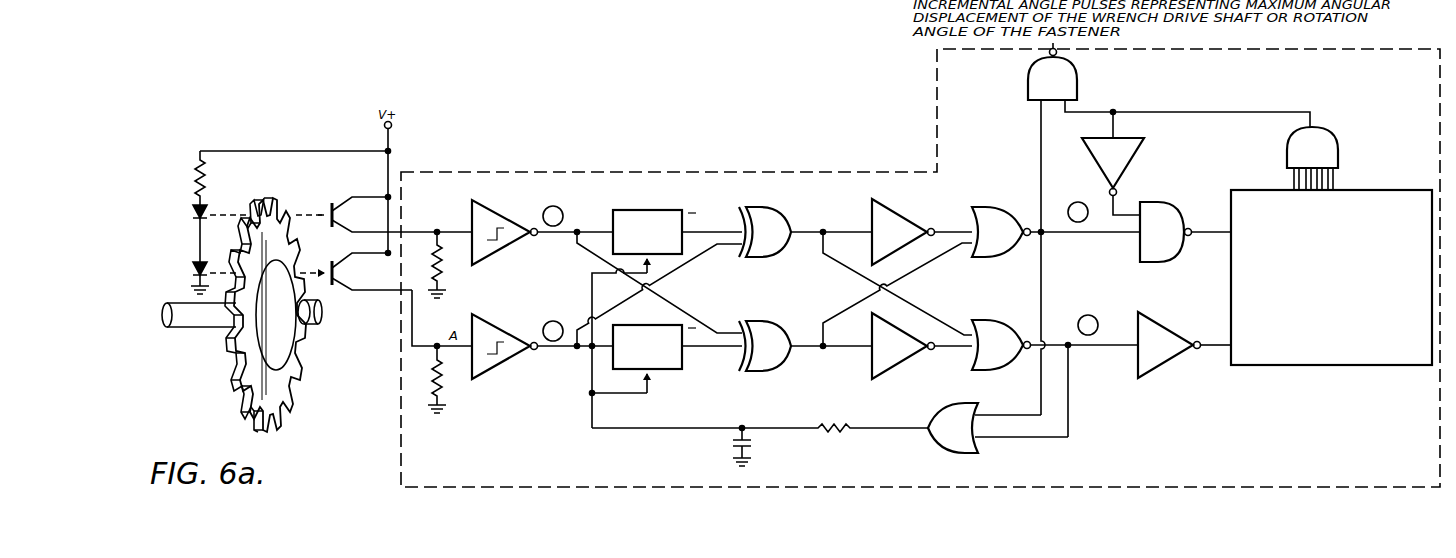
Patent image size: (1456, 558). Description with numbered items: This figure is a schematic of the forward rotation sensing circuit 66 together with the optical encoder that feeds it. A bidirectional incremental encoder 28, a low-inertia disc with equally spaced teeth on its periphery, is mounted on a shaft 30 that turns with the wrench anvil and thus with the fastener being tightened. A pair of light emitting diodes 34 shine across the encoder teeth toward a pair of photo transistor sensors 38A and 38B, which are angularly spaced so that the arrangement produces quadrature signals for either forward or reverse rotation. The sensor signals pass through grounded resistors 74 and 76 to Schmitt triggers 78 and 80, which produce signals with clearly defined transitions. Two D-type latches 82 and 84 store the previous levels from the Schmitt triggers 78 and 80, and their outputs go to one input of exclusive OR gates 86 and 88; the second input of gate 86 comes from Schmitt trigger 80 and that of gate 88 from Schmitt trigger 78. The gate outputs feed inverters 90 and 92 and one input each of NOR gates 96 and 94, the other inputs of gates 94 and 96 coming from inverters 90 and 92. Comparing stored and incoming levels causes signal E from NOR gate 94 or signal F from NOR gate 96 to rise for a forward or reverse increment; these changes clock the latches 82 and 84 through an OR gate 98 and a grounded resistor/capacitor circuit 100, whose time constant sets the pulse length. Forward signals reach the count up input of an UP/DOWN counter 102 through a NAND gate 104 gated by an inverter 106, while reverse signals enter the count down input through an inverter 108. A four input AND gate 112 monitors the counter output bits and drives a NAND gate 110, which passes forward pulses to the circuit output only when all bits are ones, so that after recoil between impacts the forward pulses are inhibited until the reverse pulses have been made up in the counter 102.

The bidirectional incremental encoder 28 is at (290, 378).
The shaft 30 is at (218, 330).
The light emitting diodes 34 is at (193, 270).
The sensor 38A is at (332, 205).
The sensor 38B is at (332, 287).
The forward rotation sensing circuit 66 is at (706, 166).
The grounded resistor 74 is at (444, 270).
The grounded resistor 76 is at (444, 385).
The Schmitt trigger 78 is at (503, 211).
The Schmitt trigger 80 is at (507, 360).
The D-type latch 82 is at (646, 209).
The D-type latch 84 is at (668, 371).
The exclusive OR gate 86 is at (778, 206).
The exclusive OR gate 88 is at (762, 366).
The inverter 90 is at (905, 210).
The inverter 92 is at (900, 364).
The NOR gate 94 is at (1013, 207).
The NOR gate 96 is at (991, 366).
The OR gate 98 is at (942, 447).
The grounded resistor/capacitor circuit 100 is at (756, 442).
The UP/DOWN counter 102 is at (1375, 365).
The NAND gate 104 is at (1153, 202).
The inverter 106 is at (1141, 137).
The inverter 108 is at (1168, 327).
The NAND gate 110 is at (1079, 95).
The four input AND gate 112 is at (1335, 144).